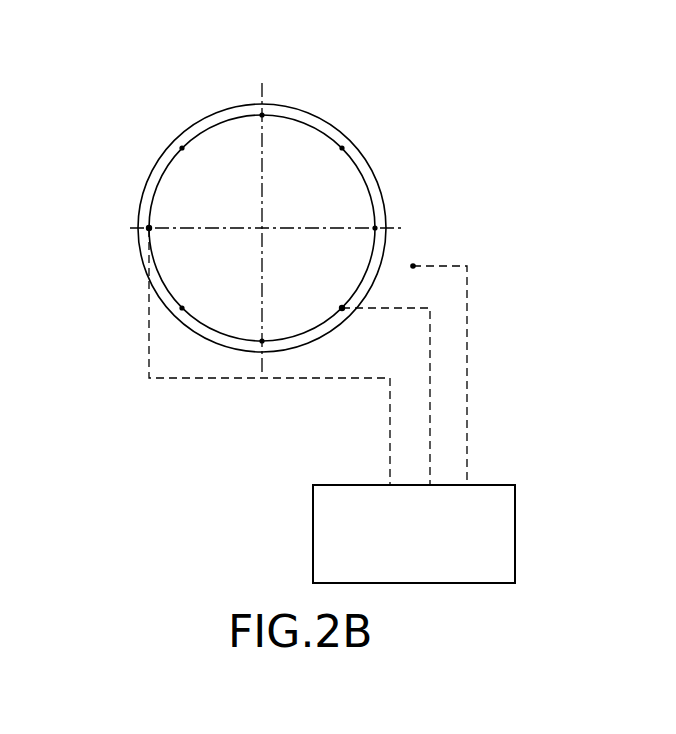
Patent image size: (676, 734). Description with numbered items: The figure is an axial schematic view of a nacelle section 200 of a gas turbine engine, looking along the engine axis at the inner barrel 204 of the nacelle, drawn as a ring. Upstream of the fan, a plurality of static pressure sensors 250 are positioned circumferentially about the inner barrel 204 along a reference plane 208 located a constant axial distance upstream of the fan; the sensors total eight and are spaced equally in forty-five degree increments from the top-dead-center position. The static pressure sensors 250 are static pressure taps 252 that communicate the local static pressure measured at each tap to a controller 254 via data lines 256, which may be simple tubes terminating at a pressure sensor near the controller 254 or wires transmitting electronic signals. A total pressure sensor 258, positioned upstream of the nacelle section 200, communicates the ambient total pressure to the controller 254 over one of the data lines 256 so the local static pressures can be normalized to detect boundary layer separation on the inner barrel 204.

The nacelle section 200 is at (122, 90).
The inner barrel 204 is at (200, 134).
The reference plane 208 is at (293, 60).
The static pressure sensors 250 is at (149, 228).
The static pressure taps 252 is at (149, 228).
The controller 254 is at (515, 550).
The data lines 256 is at (430, 400).
The total pressure sensor 258 is at (413, 266).